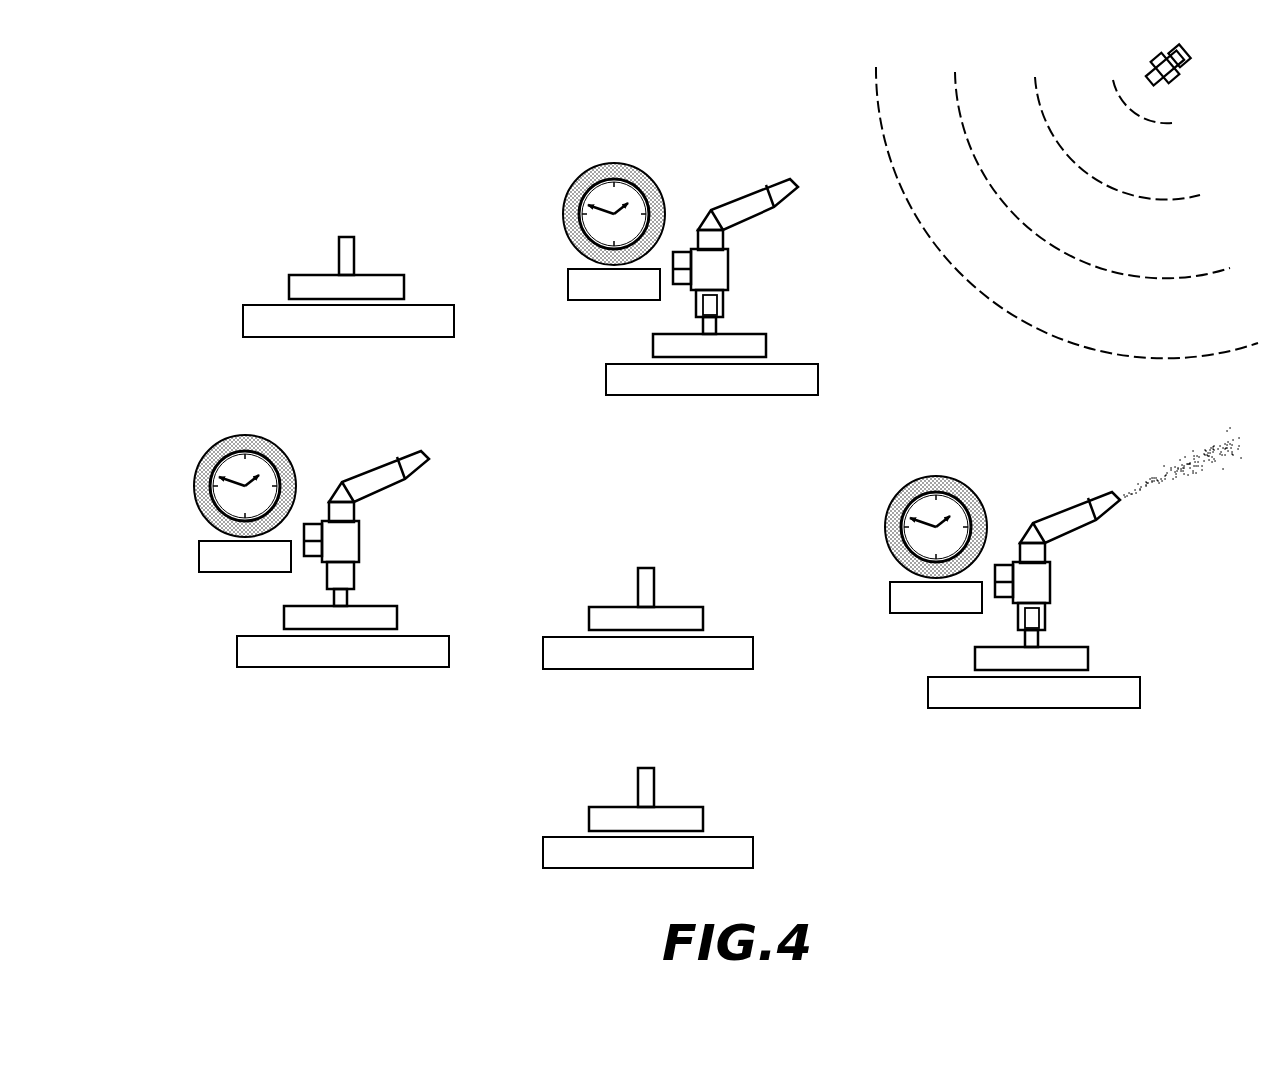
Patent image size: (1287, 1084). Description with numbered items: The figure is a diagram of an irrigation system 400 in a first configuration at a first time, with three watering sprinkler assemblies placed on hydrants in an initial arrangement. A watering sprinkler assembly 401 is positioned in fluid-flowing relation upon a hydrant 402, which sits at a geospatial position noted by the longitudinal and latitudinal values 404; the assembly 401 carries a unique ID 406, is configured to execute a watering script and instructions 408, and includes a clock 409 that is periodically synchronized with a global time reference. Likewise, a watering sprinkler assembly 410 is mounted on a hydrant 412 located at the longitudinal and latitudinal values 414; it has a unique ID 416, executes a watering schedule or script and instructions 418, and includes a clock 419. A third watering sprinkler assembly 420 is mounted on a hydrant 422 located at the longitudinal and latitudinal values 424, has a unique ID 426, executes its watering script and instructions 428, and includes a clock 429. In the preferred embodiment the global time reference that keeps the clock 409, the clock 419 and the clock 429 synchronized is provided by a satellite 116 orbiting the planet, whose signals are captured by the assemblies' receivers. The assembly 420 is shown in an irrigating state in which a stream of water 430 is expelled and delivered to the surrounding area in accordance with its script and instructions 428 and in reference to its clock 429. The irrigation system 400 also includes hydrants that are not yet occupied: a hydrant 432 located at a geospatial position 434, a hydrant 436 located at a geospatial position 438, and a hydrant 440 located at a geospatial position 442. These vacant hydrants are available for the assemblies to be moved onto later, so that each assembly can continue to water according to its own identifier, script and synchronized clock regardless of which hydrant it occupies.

The irrigation system 400 is at (722, 75).
The satellite 116 is at (1182, 85).
The watering sprinkler assembly 401 is at (380, 446).
The hydrant 402 is at (381, 606).
The longitudinal and latitudinal values 404 is at (293, 667).
The unique ID 406 is at (234, 572).
The watering script and instructions 408 is at (267, 451).
The clock 409 is at (234, 493).
The watering sprinkler assembly 410 is at (747, 178).
The hydrant 412 is at (748, 334).
The longitudinal and latitudinal values 414 is at (661, 395).
The unique ID 416 is at (604, 300).
The watering schedule or script and instructions 418 is at (626, 174).
The clock 419 is at (603, 221).
The watering sprinkler assembly 420 is at (1069, 490).
The hydrant 422 is at (1070, 647).
The longitudinal and latitudinal values 424 is at (983, 708).
The unique ID 426 is at (926, 613).
The watering script and instructions 428 is at (951, 486).
The clock 429 is at (925, 534).
The stream of water 430 is at (1185, 472).
The hydrant 432 is at (352, 253).
The geospatial position 434 is at (258, 305).
The hydrant 436 is at (683, 607).
The geospatial position 438 is at (598, 670).
The hydrant 440 is at (683, 807).
The geospatial position 442 is at (598, 868).